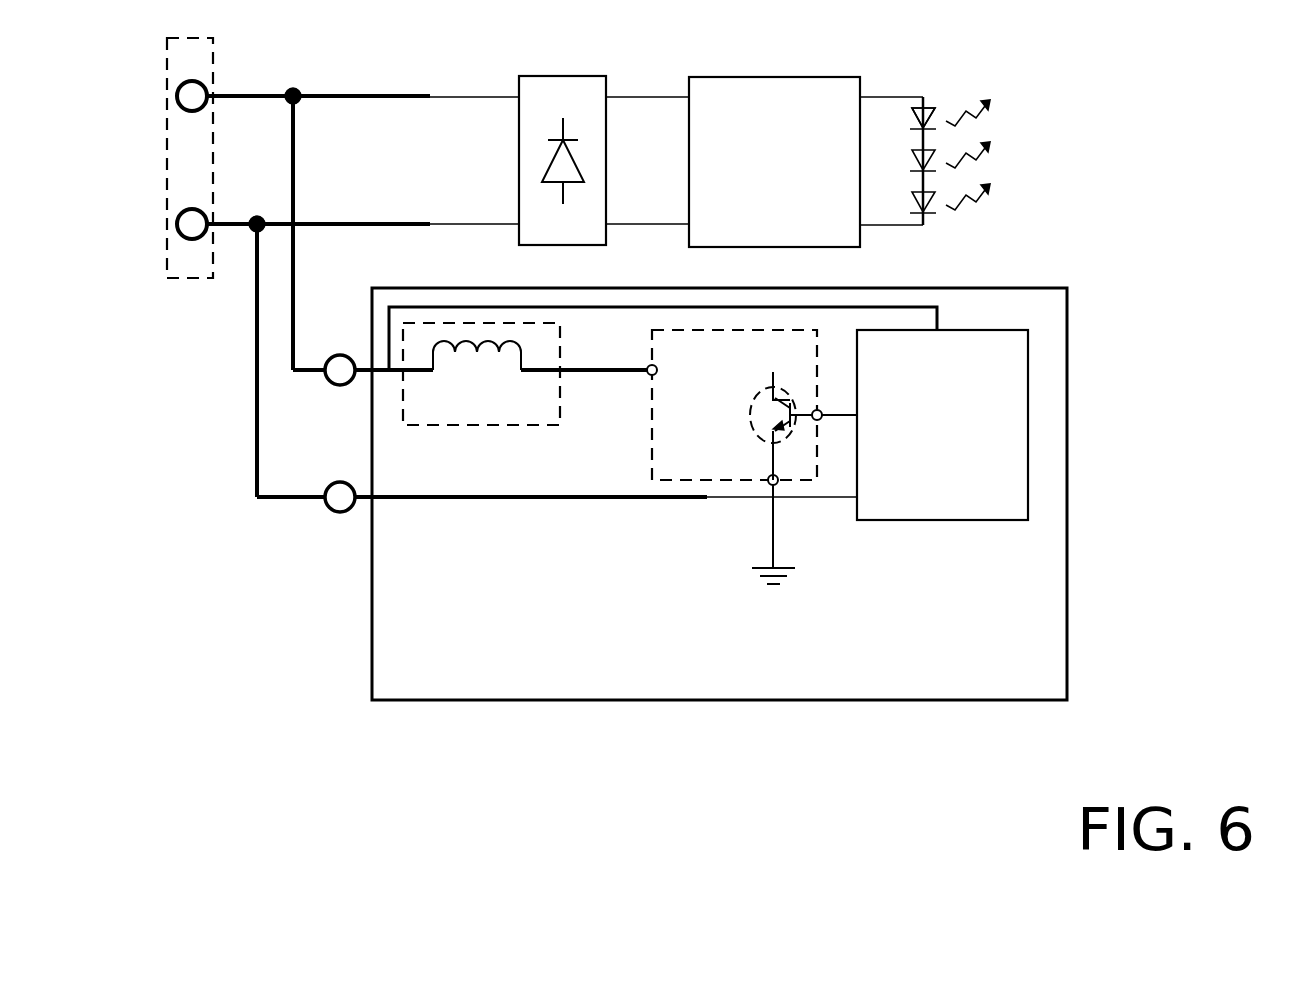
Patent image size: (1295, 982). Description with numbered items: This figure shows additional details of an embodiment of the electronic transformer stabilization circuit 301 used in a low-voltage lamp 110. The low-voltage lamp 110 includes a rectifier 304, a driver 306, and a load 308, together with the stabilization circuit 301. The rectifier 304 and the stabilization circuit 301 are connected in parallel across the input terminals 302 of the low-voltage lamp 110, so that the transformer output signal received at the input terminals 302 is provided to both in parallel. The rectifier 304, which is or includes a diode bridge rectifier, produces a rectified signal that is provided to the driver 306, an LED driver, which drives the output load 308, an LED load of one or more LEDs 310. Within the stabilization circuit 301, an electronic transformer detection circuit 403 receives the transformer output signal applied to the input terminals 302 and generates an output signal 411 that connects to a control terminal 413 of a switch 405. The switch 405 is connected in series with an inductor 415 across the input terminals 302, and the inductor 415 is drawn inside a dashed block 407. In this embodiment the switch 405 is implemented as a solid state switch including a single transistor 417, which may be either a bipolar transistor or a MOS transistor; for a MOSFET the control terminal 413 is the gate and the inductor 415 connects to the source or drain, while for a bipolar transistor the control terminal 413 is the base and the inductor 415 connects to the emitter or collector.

The low-voltage lamp 110 is at (353, 649).
The stabilization circuit 301 is at (1019, 667).
The input terminals 302 is at (168, 266).
The rectifier 304 is at (559, 234).
The driver 306 is at (788, 224).
The load 308 is at (935, 54).
The LED 310 is at (902, 118).
The electronic transformer detection circuit 403 is at (954, 502).
The switch 405 is at (734, 407).
The filter circuit 407 is at (481, 374).
The output signal 411 is at (845, 418).
The control terminal 413 is at (806, 410).
The inductor 415 is at (478, 357).
The transistor 417 is at (752, 418).